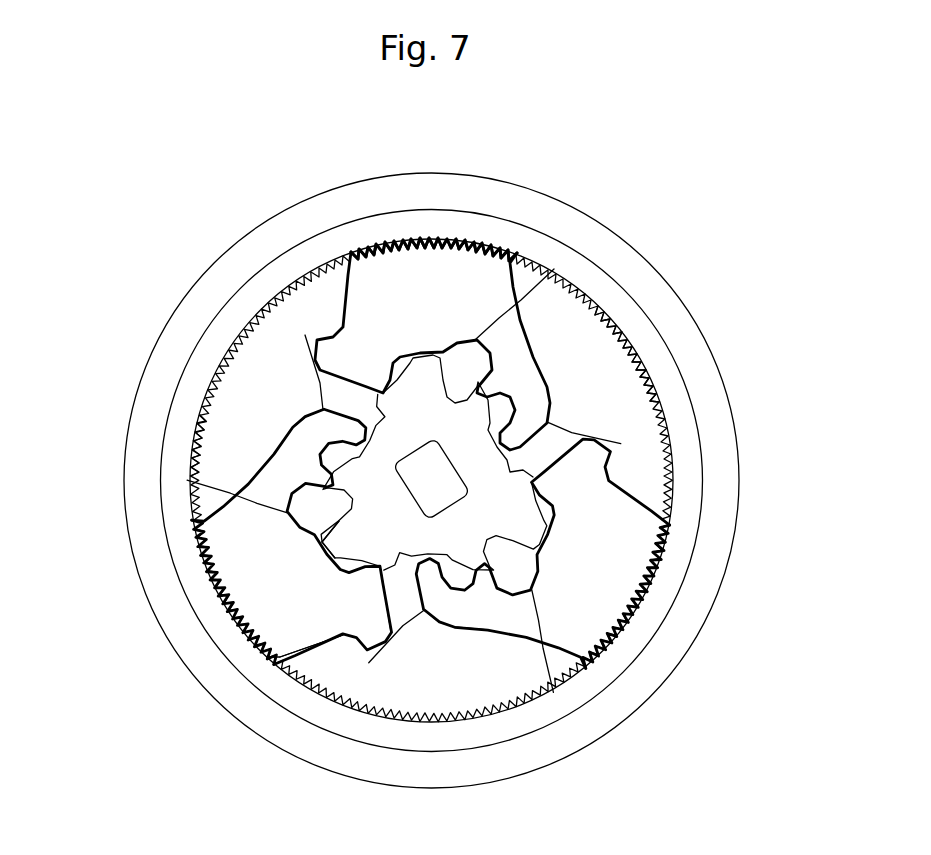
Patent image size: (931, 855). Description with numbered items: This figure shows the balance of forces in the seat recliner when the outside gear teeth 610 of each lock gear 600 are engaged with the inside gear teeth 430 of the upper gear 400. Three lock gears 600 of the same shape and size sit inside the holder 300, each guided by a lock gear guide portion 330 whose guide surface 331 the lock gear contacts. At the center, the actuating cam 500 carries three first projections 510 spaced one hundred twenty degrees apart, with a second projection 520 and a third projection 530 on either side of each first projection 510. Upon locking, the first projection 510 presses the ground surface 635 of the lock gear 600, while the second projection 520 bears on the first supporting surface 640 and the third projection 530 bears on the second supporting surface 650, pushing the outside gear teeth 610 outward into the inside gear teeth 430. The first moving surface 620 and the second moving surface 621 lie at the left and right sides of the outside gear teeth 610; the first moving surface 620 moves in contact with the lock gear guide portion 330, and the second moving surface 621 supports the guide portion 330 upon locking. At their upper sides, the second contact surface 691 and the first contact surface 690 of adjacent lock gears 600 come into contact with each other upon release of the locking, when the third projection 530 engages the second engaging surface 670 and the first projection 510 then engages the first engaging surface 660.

The holder 300 is at (578, 207).
The lock gear guide portion 330 is at (630, 398).
The guide surface 331 is at (187, 480).
The upper gear 400 is at (593, 283).
The inside gear teeth 430 is at (603, 313).
The actuating cam 500 is at (500, 509).
The first projection 510 is at (332, 543).
The second projection 520 is at (313, 567).
The third projection 530 is at (293, 437).
The lock gear 600 is at (637, 589).
The outside gear teeth 610 is at (450, 242).
The first moving surface 620 is at (253, 480).
The second moving surface 621 is at (311, 645).
The ground surface 635 is at (318, 548).
The first supporting surface 640 is at (388, 625).
The second supporting surface 650 is at (280, 440).
The first engaging surface 660 is at (200, 517).
The second engaging surface 670 is at (302, 418).
The first contact surface 690 is at (333, 415).
The second contact surface 691 is at (308, 413).